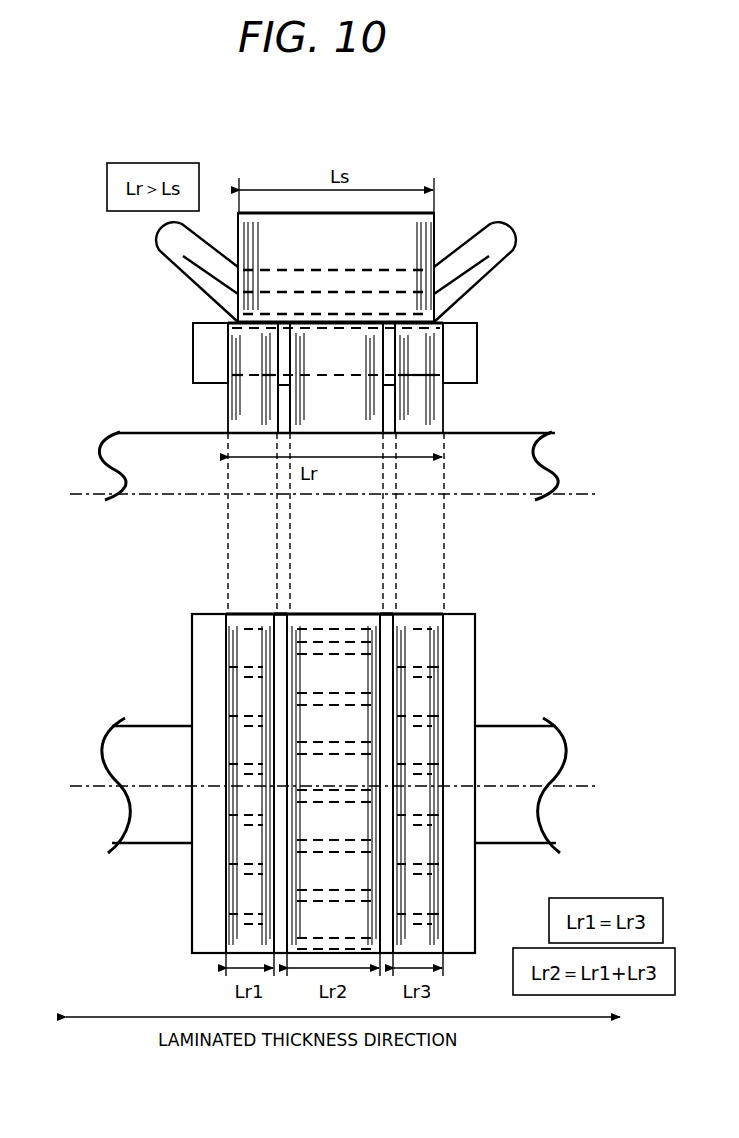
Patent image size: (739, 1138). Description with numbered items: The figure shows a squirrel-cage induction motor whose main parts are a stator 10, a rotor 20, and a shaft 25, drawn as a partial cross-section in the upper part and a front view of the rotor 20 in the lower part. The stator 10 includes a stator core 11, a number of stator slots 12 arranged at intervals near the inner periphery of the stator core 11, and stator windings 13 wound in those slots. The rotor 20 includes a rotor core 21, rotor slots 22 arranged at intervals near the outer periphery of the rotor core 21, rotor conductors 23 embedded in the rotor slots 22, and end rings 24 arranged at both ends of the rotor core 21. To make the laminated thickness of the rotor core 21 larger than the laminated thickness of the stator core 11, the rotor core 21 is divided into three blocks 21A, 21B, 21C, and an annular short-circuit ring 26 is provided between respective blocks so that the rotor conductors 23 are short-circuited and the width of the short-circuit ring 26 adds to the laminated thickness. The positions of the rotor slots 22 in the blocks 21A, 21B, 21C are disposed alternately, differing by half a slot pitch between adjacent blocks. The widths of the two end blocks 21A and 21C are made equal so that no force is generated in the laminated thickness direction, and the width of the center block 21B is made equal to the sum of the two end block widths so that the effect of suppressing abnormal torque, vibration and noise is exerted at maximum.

The stator 10 is at (392, 212).
The stator core 11 is at (320, 235).
The stator slots 12 is at (290, 268).
The stator windings 13 is at (494, 244).
The rotor 20 is at (135, 433).
The rotor core 21 is at (283, 437).
The block 21A is at (250, 437).
The block 21B is at (354, 437).
The block 21C is at (416, 437).
The rotor slots 22 is at (268, 392).
The rotor conductors 23 is at (250, 358).
The end rings 24 is at (203, 348).
The shaft 25 is at (133, 498).
The short-circuit ring 26 is at (388, 632).